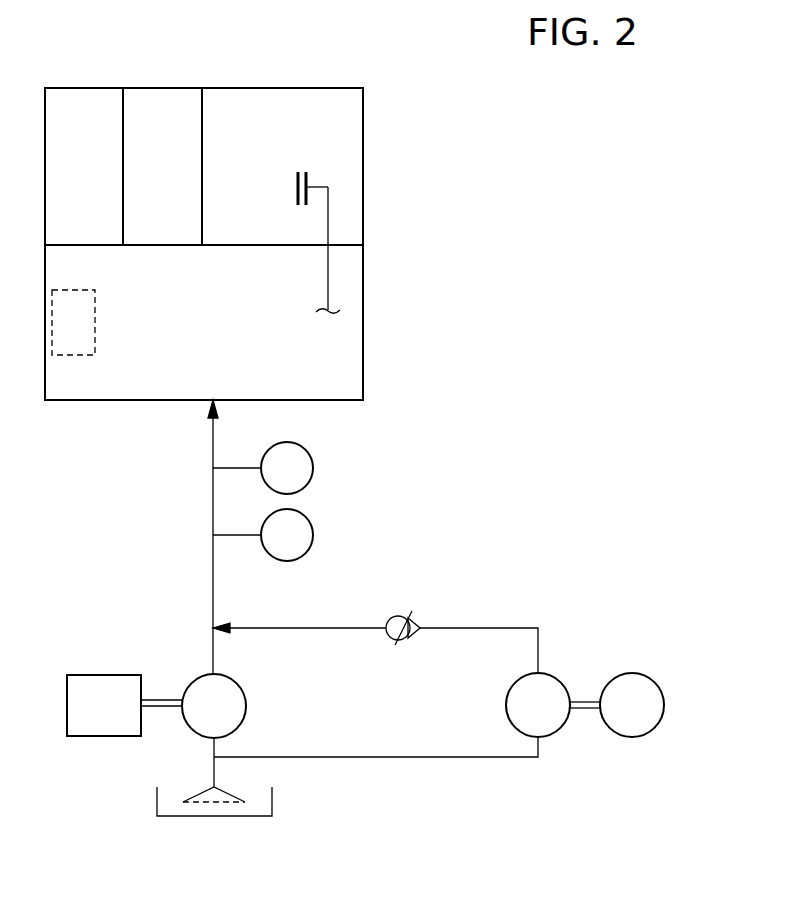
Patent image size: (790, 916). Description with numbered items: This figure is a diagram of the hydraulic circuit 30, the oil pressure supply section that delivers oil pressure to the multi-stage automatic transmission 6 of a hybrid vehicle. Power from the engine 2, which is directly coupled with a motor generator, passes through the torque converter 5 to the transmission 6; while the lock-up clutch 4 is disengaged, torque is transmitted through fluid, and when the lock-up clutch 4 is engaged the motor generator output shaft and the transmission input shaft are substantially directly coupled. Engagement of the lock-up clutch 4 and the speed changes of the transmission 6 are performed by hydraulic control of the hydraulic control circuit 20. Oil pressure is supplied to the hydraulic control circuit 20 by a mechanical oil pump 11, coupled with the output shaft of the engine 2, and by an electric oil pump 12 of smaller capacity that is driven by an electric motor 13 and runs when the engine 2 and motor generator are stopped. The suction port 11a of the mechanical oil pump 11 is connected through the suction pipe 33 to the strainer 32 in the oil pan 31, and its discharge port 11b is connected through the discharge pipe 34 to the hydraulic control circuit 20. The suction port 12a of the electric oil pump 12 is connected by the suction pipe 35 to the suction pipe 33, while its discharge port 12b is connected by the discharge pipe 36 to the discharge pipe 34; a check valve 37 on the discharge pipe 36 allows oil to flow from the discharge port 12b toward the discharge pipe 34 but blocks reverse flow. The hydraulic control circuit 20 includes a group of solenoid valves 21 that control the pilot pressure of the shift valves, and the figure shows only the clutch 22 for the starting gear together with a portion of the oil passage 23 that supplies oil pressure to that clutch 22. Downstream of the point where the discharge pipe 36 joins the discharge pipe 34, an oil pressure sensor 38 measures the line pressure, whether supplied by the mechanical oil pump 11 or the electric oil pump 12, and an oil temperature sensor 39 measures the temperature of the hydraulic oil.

The engine 2 is at (106, 675).
The lock-up clutch 4 is at (90, 86).
The torque converter 5 is at (162, 86).
The multi-stage automatic transmission 6 is at (275, 86).
The mechanical oil pump 11 is at (194, 678).
The suction port 11a is at (210, 741).
The discharge port 11b is at (216, 672).
The electric oil pump 12 is at (562, 730).
The suction port 12a is at (540, 740).
The discharge port 12b is at (544, 673).
The electric motor 13 is at (640, 735).
The hydraulic control circuit 20 is at (363, 343).
The solenoid valves 21 is at (73, 355).
The clutch 22 is at (303, 171).
The oil passage 23 is at (328, 280).
The hydraulic circuit 30 is at (445, 215).
The oil pan 31 is at (157, 803).
The strainer 32 is at (222, 805).
The suction pipe 33 is at (215, 773).
The discharge pipe 34 is at (213, 487).
The suction pipe 35 is at (448, 760).
The discharge pipe 36 is at (472, 628).
The check valve 37 is at (406, 614).
The oil pressure sensor 38 is at (313, 467).
The oil temperature sensor 39 is at (313, 534).